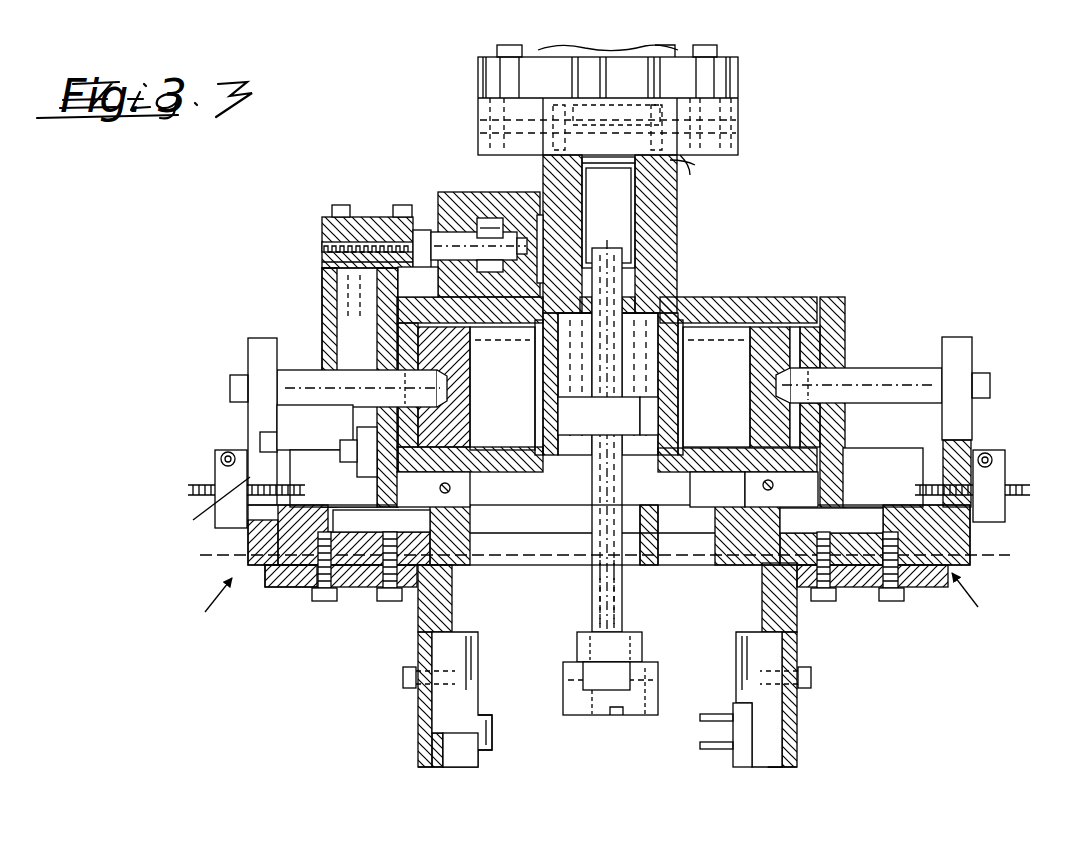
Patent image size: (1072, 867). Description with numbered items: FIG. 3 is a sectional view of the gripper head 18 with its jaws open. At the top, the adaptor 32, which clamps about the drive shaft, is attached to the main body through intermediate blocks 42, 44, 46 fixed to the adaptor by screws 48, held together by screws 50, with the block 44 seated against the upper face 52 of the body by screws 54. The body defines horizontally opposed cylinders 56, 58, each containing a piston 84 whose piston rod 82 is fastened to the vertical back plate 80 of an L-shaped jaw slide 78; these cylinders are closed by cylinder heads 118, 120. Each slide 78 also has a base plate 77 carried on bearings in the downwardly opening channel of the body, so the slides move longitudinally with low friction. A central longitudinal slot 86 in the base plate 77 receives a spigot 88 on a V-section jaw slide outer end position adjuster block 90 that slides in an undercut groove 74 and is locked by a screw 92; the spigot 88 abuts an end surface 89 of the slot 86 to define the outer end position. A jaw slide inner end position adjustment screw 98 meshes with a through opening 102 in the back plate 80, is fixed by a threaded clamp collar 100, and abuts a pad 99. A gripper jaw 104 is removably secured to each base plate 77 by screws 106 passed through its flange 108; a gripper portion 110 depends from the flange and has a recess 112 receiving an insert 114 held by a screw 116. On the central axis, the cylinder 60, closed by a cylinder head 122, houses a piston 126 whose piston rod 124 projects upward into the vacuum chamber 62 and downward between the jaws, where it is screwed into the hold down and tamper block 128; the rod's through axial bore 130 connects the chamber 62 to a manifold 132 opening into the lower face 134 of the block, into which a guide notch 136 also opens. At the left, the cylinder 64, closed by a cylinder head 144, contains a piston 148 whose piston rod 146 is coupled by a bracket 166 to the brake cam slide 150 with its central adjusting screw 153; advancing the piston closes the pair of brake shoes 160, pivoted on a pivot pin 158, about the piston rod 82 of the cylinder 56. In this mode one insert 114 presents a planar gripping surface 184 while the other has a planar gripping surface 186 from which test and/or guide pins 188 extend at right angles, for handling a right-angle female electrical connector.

The head 18 is at (778, 220).
The adaptor 32 is at (712, 122).
The intermediate block 42 is at (478, 110).
The intermediate block 44 is at (640, 142).
The intermediate block 46 is at (736, 103).
The screws 48 is at (497, 51).
The screws 50 is at (478, 130).
The upper face 52 is at (688, 168).
The screws 54 is at (552, 112).
The cylinder 56 is at (520, 388).
The cylinder 58 is at (727, 388).
The cylinder 60 is at (642, 338).
The vacuum chamber 62 is at (626, 202).
The cylinder 64 is at (418, 282).
The undercut grooves 74 is at (530, 460).
The base plate 77 is at (265, 578).
The jaw slide 78 is at (590, 598).
The vertical back plate 80 is at (255, 348).
The piston rod 82 is at (303, 366).
The piston 84 is at (470, 345).
The central longitudinal slot 86 is at (388, 600).
The spigot 88 is at (375, 512).
The end surface 89 is at (478, 523).
The jaw slide outer end position adjuster block 90 is at (455, 480).
The screw 92 is at (449, 492).
The jaw slide inner end position adjustment screw 98 is at (193, 486).
The pad 99 is at (375, 484).
The threaded clamp collar 100 is at (215, 455).
The through opening 102 is at (193, 520).
The gripper jaw 104 is at (428, 612).
The screws 106 is at (325, 602).
The flange 108 is at (292, 590).
The gripper portion 110 is at (418, 760).
The recess 112 is at (432, 716).
The insert 114 is at (458, 768).
The screw 116 is at (403, 682).
The cylinder head 118 is at (322, 292).
The cylinder head 120 is at (832, 300).
The cylinder head 122 is at (655, 532).
The piston rod 124 is at (622, 260).
The piston 126 is at (601, 428).
The hold down and tamper block 128 is at (658, 692).
The through axial bore 130 is at (600, 580).
The manifold 132 is at (630, 672).
The lower face 134 is at (563, 702).
The guide notch 136 is at (616, 718).
The cylinder head 144 is at (456, 200).
The piston rod 146 is at (455, 243).
The piston 148 is at (522, 218).
The brake cam slide 150 is at (322, 263).
The central adjusting screw 153 is at (322, 246).
The pivot pin 158 is at (260, 440).
The brake shoes 160 is at (353, 427).
The bracket 166 is at (322, 222).
The planar gripping surface 184 is at (494, 728).
The planar gripping surface 186 is at (712, 722).
The test and/or guide pins 188 is at (712, 748).